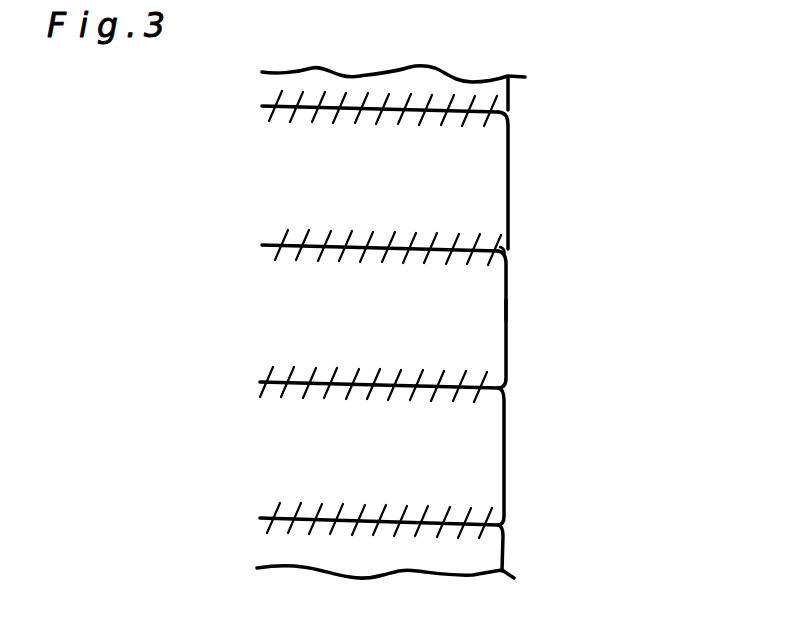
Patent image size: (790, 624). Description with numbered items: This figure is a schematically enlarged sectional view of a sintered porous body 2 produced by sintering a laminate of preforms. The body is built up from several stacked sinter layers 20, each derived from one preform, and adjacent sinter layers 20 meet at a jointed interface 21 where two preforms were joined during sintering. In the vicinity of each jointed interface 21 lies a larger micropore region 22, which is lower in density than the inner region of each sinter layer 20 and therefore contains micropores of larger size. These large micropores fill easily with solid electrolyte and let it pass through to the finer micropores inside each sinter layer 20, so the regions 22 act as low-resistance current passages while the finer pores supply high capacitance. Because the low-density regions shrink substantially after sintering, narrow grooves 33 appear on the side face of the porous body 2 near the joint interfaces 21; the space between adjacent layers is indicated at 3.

The sintered porous body 2 is at (445, 322).
The gap between layers 3 is at (574, 337).
The sinter layer 20 is at (480, 168).
The jointed interface 21 is at (330, 380).
The larger micropore region 22 is at (490, 222).
The narrow groove 33 is at (511, 252).